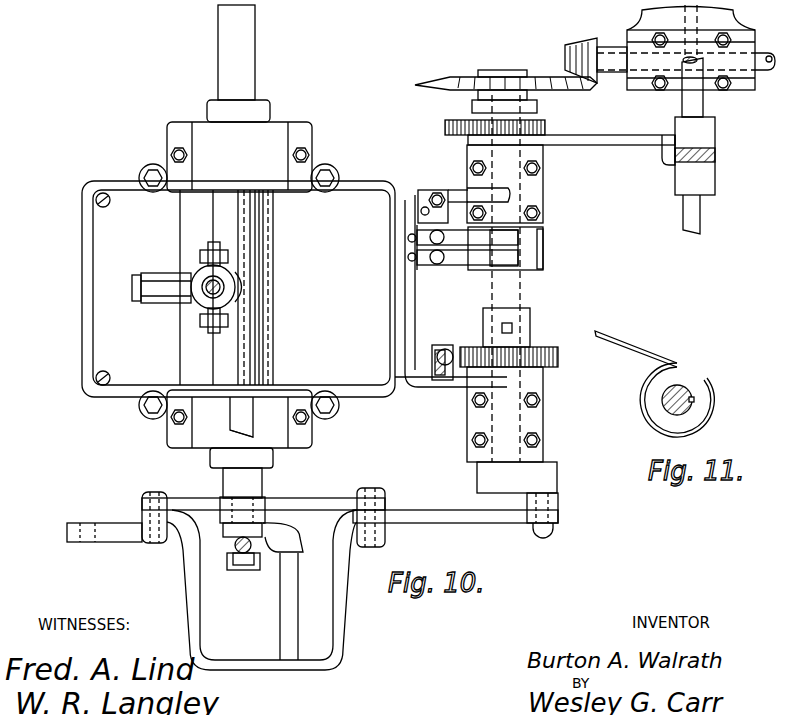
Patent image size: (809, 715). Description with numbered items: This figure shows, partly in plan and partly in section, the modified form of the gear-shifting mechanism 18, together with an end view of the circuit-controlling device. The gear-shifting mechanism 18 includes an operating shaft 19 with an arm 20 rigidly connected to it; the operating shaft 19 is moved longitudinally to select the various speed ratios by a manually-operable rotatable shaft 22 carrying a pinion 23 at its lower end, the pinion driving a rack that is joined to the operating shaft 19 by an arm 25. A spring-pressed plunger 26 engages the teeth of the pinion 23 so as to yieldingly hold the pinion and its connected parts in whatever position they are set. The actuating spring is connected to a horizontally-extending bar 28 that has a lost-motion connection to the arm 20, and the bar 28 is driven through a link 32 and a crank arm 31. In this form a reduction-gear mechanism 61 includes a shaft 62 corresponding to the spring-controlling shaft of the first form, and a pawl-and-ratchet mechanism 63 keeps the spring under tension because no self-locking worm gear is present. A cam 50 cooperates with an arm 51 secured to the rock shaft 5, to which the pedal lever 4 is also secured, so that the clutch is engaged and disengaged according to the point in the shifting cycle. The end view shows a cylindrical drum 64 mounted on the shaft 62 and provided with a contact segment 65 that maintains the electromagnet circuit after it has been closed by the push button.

In FIG. 10, the pedal lever 4 is at (715, 153).
In FIG. 10, the rock shaft 5 is at (701, 217).
In FIG. 10, the gear-shifting mechanism 18 is at (356, 200).
In FIG. 10, the operating shaft 19 is at (243, 88).
In FIG. 10, the arm 20 is at (291, 546).
In FIG. 10, the manually-operable rotatable shaft 22 is at (221, 289).
In FIG. 10, the pinion 23 is at (190, 303).
In FIG. 10, the arm 25 is at (236, 551).
In FIG. 10, the spring-pressed plunger 26 is at (164, 280).
In FIG. 10, the horizontally-extending bar 28 is at (124, 530).
In FIG. 10, the crank arm 31 is at (530, 486).
In FIG. 10, the link 32 is at (507, 519).
In FIG. 10, the cam 50 is at (550, 125).
In FIG. 10, the arm 51 is at (632, 144).
In FIG. 10, the reduction-gear mechanism 61 is at (566, 72).
In FIG. 10, the shaft 62 is at (515, 302).
In FIG. 10, the pawl-and-ratchet mechanism 63 is at (471, 353).
In FIG. 10, the cylindrical drum 64 is at (530, 261).
In FIG. 11, the cylindrical drum 64 is at (700, 401).
In FIG. 10, the contact segment 65 is at (544, 240).
In FIG. 11, the contact segment 65 is at (705, 414).